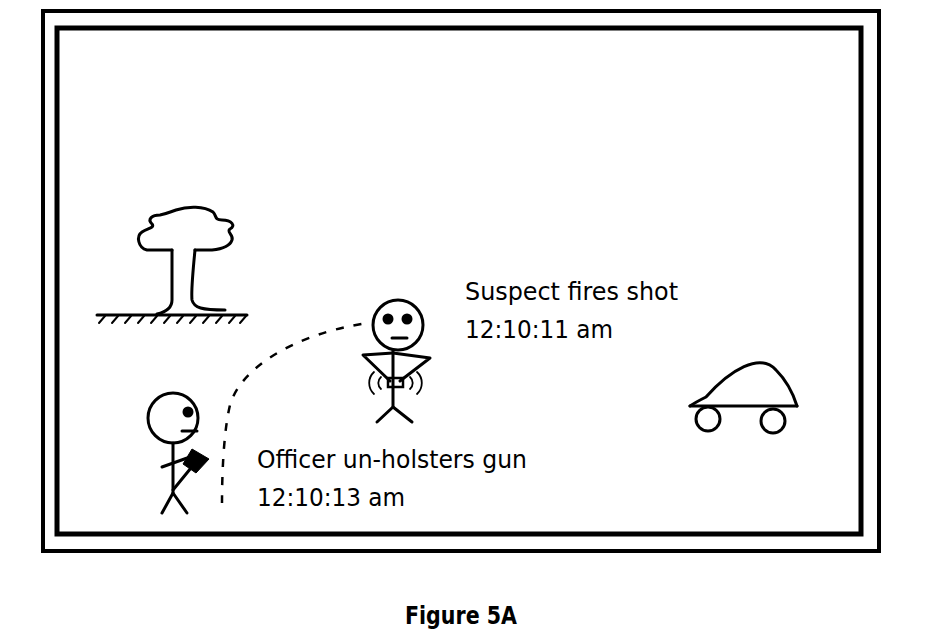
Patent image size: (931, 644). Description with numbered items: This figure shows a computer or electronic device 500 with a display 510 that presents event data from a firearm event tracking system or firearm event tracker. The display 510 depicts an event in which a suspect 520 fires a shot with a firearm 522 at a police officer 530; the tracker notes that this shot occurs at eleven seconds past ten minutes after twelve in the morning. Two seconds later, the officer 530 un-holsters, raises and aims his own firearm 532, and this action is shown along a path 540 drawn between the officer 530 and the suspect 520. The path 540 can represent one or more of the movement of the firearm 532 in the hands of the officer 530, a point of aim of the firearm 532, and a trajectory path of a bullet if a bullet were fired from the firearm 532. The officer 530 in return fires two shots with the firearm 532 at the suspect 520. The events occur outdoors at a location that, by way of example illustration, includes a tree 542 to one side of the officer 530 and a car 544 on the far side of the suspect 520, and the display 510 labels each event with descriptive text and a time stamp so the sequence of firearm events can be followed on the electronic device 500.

The electronic device 500 is at (878, 73).
The display 510 is at (823, 63).
The suspect 520 is at (393, 300).
The firearm 522 is at (405, 385).
The police officer 530 is at (153, 400).
The firearm 532 is at (173, 481).
The path 540 is at (257, 364).
The tree 542 is at (213, 212).
The car 544 is at (738, 360).